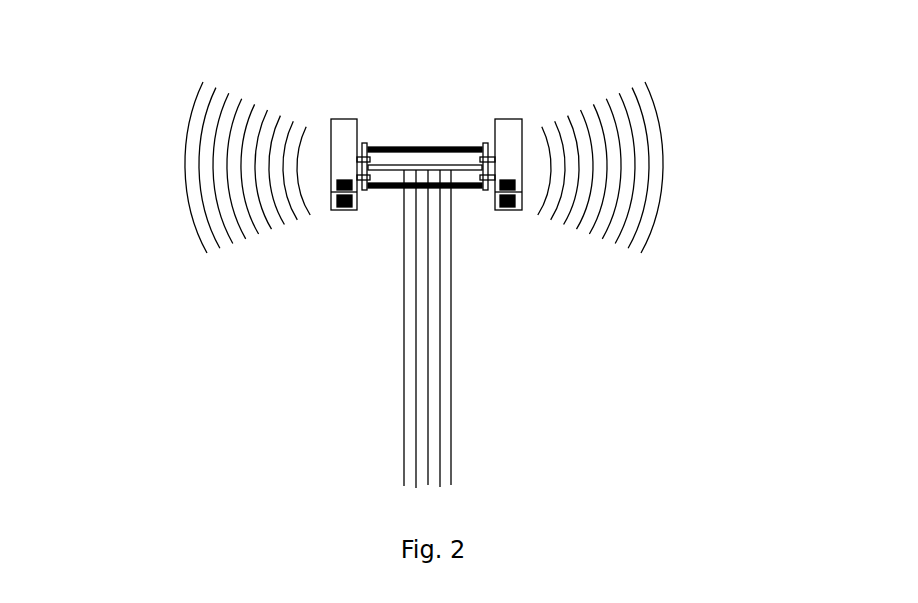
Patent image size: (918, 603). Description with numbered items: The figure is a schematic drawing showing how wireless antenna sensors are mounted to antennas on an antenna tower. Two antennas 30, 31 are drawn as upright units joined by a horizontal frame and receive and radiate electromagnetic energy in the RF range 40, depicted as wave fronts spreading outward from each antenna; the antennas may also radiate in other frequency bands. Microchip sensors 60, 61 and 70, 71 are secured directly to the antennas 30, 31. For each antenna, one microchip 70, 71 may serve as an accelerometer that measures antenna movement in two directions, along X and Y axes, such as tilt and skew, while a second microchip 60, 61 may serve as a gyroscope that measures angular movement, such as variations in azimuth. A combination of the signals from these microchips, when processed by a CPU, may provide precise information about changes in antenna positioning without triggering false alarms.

The antenna 30 is at (344, 110).
The antenna 31 is at (513, 109).
The electromagnetic energy in the RF range 40 is at (168, 170).
The microchip sensor 60 is at (342, 221).
The microchip sensor 61 is at (508, 221).
The microchip sensor 70 is at (366, 198).
The microchip sensor 71 is at (486, 198).